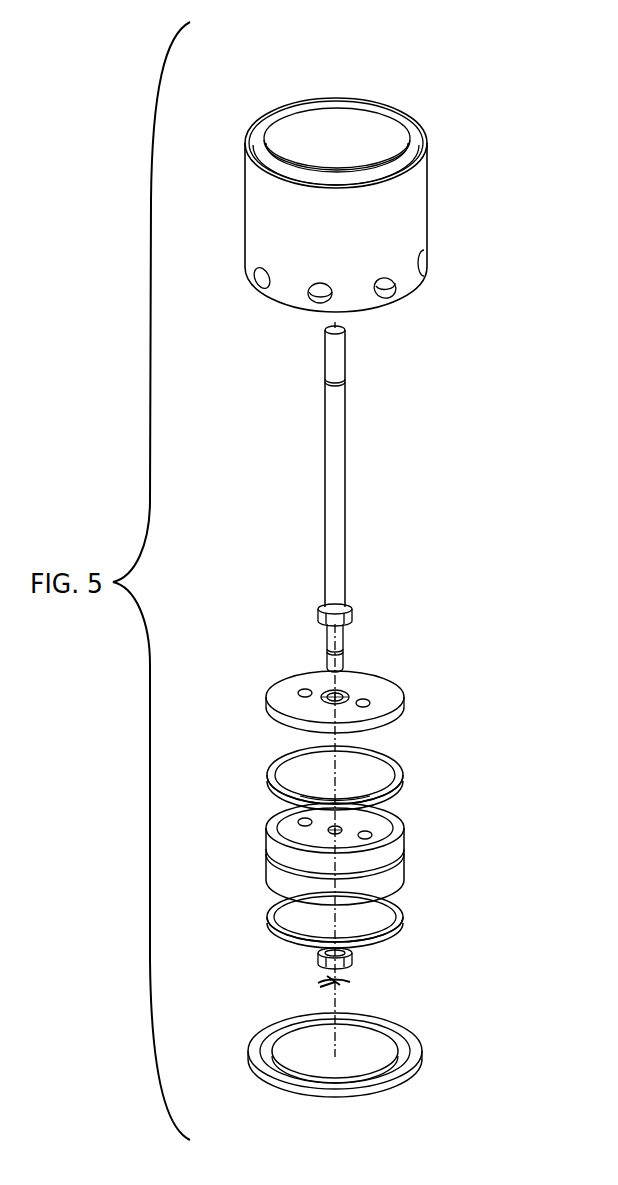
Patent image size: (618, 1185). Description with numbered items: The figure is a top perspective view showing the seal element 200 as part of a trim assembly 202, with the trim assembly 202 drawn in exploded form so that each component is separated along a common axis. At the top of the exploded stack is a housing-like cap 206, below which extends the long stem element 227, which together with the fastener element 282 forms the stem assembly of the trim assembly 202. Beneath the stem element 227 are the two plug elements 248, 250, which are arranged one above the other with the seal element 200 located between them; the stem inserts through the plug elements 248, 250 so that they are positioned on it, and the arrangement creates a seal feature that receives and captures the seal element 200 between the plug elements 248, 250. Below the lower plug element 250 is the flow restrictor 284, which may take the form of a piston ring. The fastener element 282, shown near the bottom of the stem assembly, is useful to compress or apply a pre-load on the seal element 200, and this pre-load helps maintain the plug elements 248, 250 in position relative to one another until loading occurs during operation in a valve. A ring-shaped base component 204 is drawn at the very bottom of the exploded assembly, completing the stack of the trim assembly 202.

The trim assembly 202 is at (473, 78).
The housing 206 is at (460, 178).
The stem element 227 is at (346, 464).
The plug element 248 is at (424, 680).
The seal element 200 is at (424, 755).
The plug element 250 is at (424, 822).
The flow restrictor 284 is at (424, 900).
The fastener element 282 is at (388, 950).
The base ring 204 is at (424, 1027).